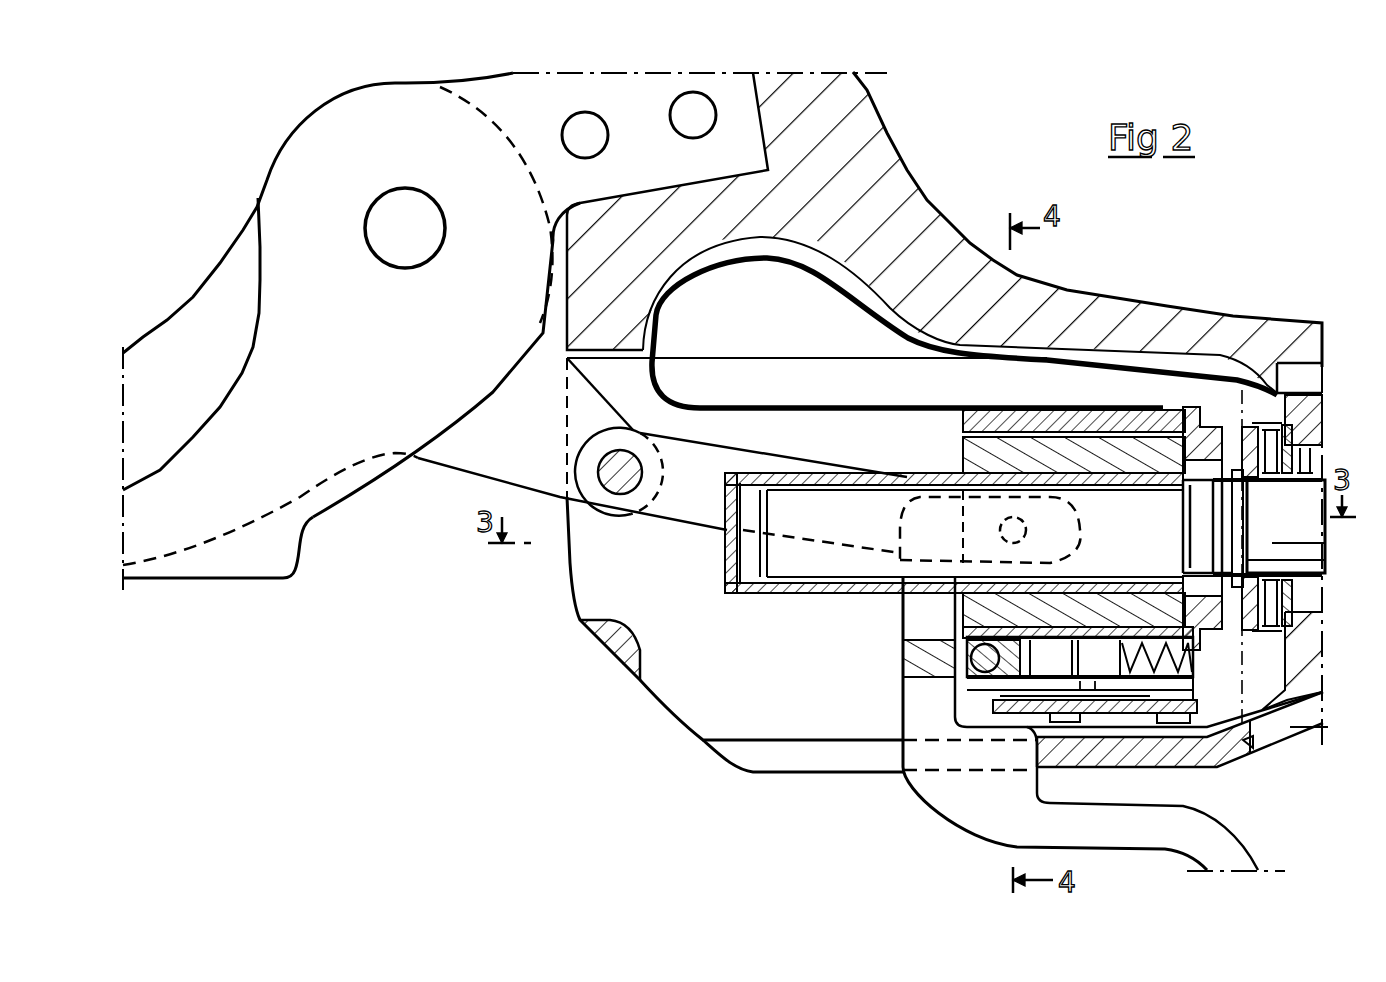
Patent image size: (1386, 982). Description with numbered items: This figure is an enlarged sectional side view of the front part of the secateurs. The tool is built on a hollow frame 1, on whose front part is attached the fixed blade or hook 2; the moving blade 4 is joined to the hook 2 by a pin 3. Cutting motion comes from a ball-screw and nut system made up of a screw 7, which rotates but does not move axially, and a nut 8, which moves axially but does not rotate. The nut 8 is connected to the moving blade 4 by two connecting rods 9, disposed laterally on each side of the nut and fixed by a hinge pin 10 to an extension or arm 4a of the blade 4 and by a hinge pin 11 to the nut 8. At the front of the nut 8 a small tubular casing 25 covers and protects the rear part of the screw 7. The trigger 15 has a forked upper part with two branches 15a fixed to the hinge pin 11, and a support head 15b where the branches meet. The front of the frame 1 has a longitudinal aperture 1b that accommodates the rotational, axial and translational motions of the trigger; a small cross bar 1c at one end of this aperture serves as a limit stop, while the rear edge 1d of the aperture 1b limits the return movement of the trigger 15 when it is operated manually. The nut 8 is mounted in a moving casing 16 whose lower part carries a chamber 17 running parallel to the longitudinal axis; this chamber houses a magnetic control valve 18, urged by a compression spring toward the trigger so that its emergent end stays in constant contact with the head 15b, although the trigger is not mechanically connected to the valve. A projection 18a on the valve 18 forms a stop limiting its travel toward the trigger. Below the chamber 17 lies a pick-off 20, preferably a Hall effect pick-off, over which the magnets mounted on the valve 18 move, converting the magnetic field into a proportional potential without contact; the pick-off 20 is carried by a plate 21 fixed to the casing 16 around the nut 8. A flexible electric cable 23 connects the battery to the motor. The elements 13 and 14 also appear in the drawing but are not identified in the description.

The hollow frame 1 is at (1200, 323).
The longitudinal aperture 1b is at (750, 780).
The cross bar 1c is at (595, 650).
The rear edge of the aperture 1d is at (1033, 757).
The fixed blade or hook 2 is at (193, 530).
The pin 3 is at (397, 213).
The moving blade 4 is at (197, 313).
The extension or arm 4a is at (460, 487).
The screw 7 is at (785, 580).
The nut 8 is at (1143, 360).
The connecting rods 9 is at (637, 530).
The hinge pin 10 is at (601, 484).
The hinge pin 11 is at (1045, 410).
The bearing 13 is at (1277, 363).
The shaft 14 is at (1318, 323).
The trigger 15 is at (998, 827).
The branches 15a is at (917, 617).
The support head 15b is at (950, 683).
The moving casing 16 is at (1080, 352).
The chamber 17 is at (1249, 740).
The magnetic control valve 18 is at (1000, 670).
The projection 18a is at (890, 753).
The pick-off 20 is at (1130, 770).
The plate 21 is at (1220, 767).
The flexible electric cable 23 is at (896, 325).
The tubular casing 25 is at (718, 585).